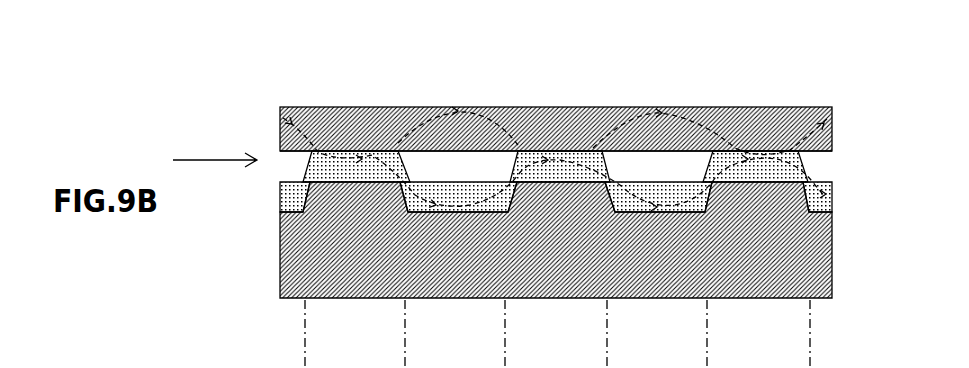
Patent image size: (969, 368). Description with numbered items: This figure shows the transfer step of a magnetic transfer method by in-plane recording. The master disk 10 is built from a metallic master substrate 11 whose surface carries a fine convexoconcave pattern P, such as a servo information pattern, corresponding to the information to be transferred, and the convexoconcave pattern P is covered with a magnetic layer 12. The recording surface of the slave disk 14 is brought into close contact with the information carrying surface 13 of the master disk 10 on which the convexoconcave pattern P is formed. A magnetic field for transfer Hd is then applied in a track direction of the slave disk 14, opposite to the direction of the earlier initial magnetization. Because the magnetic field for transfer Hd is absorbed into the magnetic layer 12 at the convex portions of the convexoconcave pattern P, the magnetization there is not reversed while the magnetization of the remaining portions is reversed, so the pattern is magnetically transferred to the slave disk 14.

The master disk 10 is at (558, 292).
The master substrate 11 is at (832, 254).
The magnetic layer 12 is at (569, 160).
The information carrying surface 13 is at (800, 149).
The slave disk 14 is at (790, 107).
The convexoconcave pattern P is at (362, 150).
The magnetic field for transfer Hd is at (215, 176).